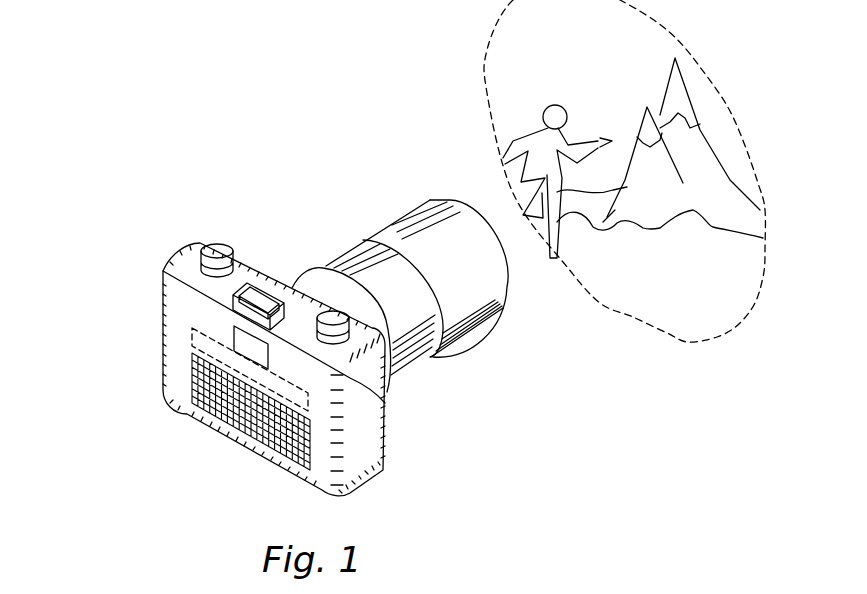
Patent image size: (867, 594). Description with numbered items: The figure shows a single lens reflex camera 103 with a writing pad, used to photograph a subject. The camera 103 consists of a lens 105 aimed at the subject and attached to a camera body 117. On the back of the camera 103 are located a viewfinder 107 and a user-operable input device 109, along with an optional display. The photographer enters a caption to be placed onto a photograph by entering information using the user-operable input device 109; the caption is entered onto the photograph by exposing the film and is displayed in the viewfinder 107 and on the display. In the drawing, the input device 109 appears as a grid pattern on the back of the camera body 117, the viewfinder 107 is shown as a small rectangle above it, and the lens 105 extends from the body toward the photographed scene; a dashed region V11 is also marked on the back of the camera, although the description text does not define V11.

The camera 103 is at (305, 227).
The lens 105 is at (487, 287).
The viewfinder 107 is at (276, 366).
The user-operable input device 109 is at (222, 419).
The camera body 117 is at (186, 258).
The dashed viewfinder region V11 is at (176, 336).